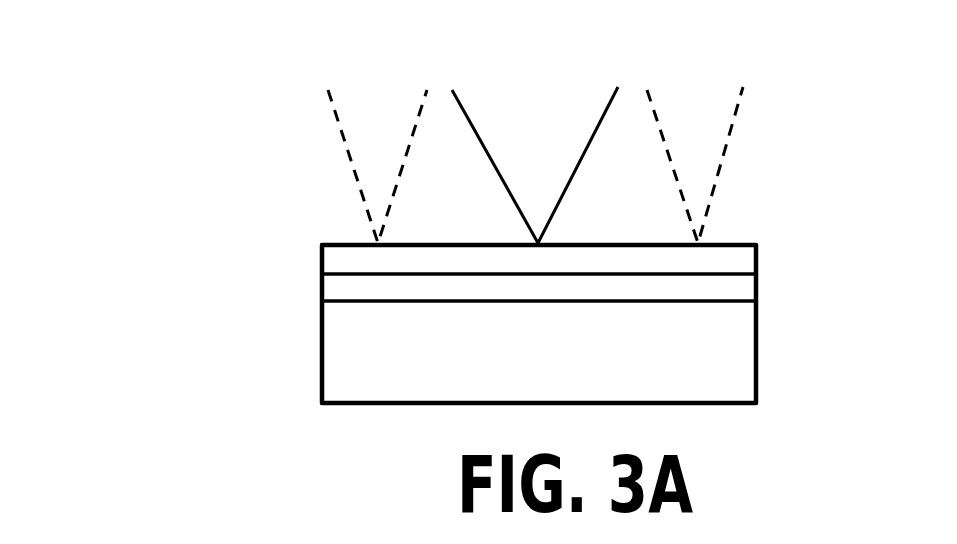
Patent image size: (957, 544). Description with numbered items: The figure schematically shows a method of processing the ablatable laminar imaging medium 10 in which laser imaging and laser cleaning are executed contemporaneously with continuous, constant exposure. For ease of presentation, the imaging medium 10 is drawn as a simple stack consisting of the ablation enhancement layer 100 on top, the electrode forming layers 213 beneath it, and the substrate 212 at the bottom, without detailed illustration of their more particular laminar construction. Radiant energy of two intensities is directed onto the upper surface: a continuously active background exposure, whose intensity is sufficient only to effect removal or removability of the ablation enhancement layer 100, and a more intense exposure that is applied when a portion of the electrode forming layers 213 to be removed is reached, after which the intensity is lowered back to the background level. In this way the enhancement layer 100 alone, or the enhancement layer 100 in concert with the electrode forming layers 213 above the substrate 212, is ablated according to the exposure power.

The ablatable laminar imaging medium 10 is at (132, 86).
The ablation enhancement layer 100 is at (756, 262).
The electrode forming layers 213 is at (756, 285).
The substrate 212 is at (756, 357).